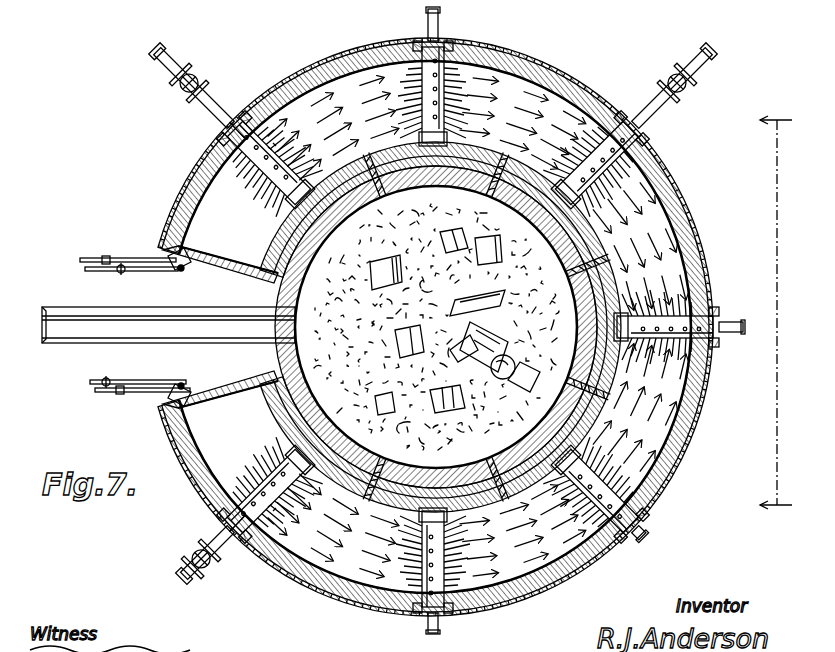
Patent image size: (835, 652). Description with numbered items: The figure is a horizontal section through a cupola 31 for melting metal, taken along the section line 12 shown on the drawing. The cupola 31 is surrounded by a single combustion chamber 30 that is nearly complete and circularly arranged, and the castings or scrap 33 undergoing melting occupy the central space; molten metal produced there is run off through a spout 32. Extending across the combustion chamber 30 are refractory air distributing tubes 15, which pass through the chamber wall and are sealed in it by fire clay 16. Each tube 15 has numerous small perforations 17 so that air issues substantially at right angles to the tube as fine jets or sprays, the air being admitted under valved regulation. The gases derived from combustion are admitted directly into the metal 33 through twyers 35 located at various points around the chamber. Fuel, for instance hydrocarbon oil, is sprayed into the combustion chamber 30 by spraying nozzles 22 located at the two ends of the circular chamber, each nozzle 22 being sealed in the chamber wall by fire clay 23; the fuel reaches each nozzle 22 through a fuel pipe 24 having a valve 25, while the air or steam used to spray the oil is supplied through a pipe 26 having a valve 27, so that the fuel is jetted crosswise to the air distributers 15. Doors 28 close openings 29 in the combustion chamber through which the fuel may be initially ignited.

The section line 12 is at (776, 313).
The air distributing tube 15 is at (262, 160).
The fire clay 16 is at (245, 120).
The perforation 17 is at (243, 500).
The spraying nozzle 22 is at (184, 272).
The fire clay 23 is at (210, 268).
The fuel pipe 24 is at (140, 258).
The fuel valve 25 is at (108, 256).
The air or steam pipe 26 is at (158, 272).
The air or steam valve 27 is at (120, 273).
The door 28 is at (185, 172).
The opening 29 is at (222, 176).
The combustion chamber 30 is at (553, 102).
The cupola 31 is at (612, 287).
The spout 32 is at (76, 346).
The castings or scrap 33 is at (372, 319).
The twyer 35 is at (432, 222).